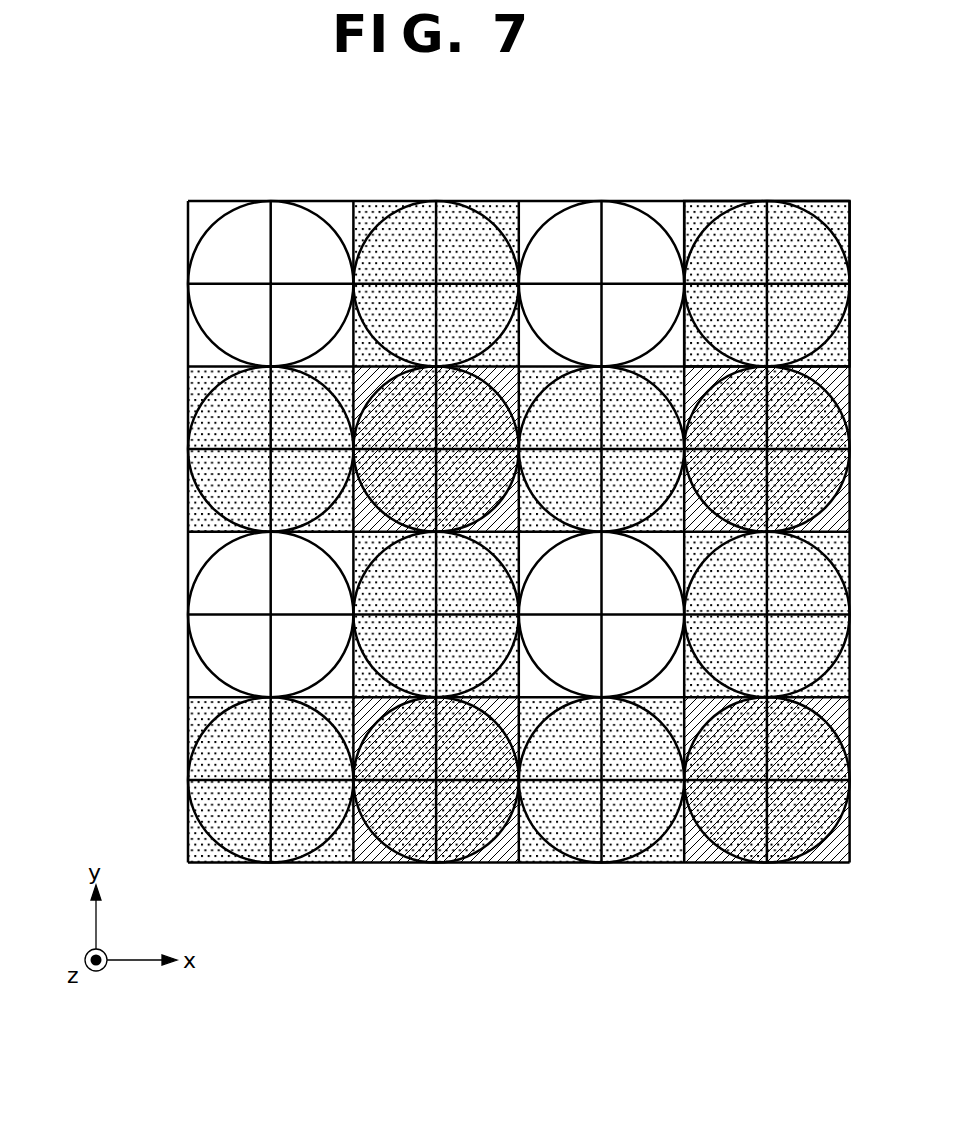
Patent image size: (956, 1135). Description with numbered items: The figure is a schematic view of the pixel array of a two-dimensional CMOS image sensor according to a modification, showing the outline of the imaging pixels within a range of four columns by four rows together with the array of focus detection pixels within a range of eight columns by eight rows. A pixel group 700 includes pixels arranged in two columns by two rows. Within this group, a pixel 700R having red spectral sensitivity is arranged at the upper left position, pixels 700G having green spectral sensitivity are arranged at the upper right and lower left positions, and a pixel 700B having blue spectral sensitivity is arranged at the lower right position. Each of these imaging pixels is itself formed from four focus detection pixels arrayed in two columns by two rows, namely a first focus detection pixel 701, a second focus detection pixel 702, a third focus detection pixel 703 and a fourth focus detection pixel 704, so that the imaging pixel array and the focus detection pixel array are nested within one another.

The pixel group 700 is at (436, 511).
The pixel having R (red) spectral sensitivity 700R is at (200, 297).
The pixel having G (green) spectral sensitivity 700G is at (218, 415).
The pixel having B (blue) spectral sensitivity 700B is at (377, 470).
The first focus detection pixel 701 is at (733, 232).
The second focus detection pixel 702 is at (802, 232).
The third focus detection pixel 703 is at (722, 303).
The fourth focus detection pixel 704 is at (792, 303).